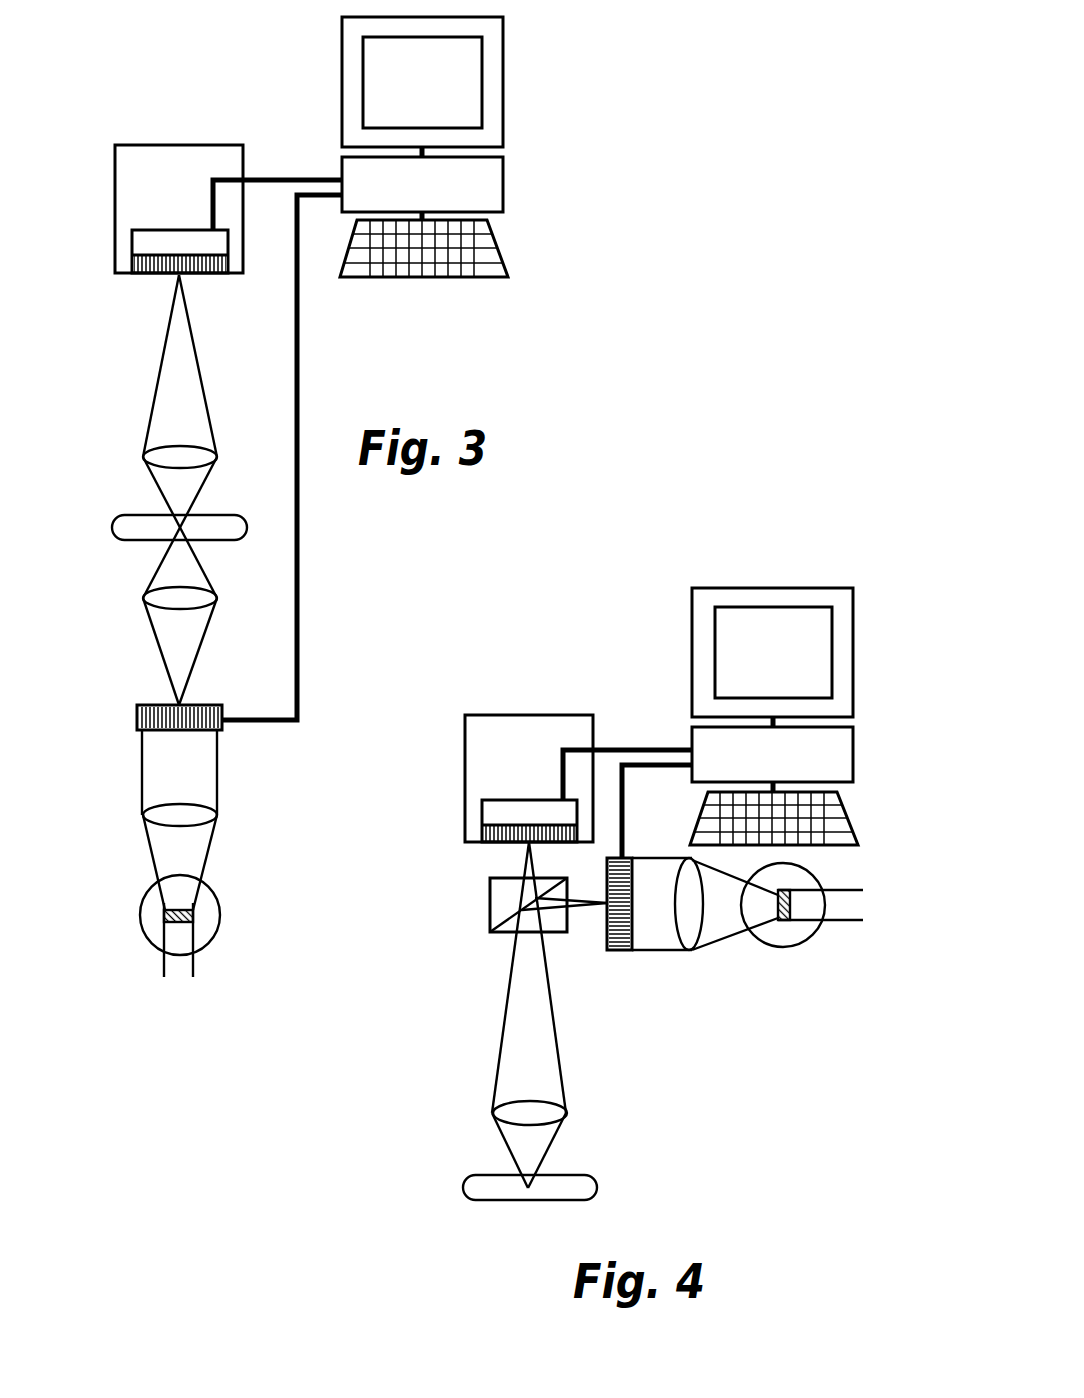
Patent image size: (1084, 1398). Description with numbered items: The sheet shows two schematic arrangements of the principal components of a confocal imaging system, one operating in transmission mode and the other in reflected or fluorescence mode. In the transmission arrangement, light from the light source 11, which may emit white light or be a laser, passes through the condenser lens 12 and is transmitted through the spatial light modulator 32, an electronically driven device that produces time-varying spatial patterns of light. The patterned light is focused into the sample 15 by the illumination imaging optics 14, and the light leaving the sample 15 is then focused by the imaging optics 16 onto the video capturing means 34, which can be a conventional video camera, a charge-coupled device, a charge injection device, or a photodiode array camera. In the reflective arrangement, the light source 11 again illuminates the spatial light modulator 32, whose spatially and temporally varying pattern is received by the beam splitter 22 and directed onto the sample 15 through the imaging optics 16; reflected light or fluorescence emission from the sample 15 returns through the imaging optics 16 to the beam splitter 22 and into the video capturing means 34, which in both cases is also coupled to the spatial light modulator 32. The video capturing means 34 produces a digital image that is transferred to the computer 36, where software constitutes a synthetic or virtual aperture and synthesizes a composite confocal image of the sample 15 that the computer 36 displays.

In FIG. 3, the light source 11 is at (140, 911).
In FIG. 4, the light source 11 is at (785, 947).
In FIG. 3, the condenser lens 12 is at (143, 811).
In FIG. 4, the condenser lens 12 is at (690, 950).
In FIG. 3, the illumination imaging optics 14 is at (143, 595).
In FIG. 3, the sample 15 is at (112, 526).
In FIG. 4, the sample 15 is at (463, 1187).
In FIG. 3, the imaging optics 16 is at (143, 453).
In FIG. 4, the imaging optics 16 is at (493, 1109).
In FIG. 4, the beam splitter 22 is at (490, 900).
In FIG. 3, the spatial light modulator 32 is at (137, 713).
In FIG. 4, the spatial light modulator 32 is at (618, 950).
In FIG. 3, the video capturing means 34 is at (115, 232).
In FIG. 4, the video capturing means 34 is at (465, 800).
In FIG. 3, the computer 36 is at (342, 76).
In FIG. 4, the computer 36 is at (692, 648).